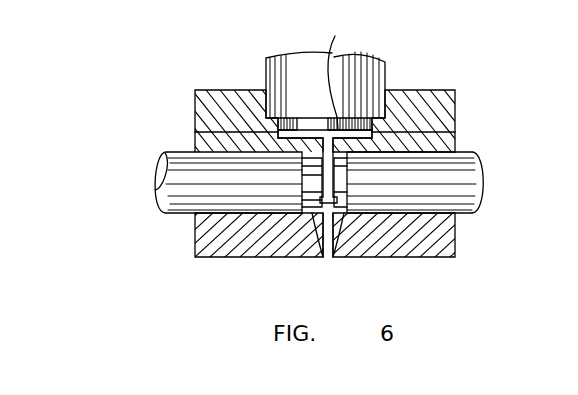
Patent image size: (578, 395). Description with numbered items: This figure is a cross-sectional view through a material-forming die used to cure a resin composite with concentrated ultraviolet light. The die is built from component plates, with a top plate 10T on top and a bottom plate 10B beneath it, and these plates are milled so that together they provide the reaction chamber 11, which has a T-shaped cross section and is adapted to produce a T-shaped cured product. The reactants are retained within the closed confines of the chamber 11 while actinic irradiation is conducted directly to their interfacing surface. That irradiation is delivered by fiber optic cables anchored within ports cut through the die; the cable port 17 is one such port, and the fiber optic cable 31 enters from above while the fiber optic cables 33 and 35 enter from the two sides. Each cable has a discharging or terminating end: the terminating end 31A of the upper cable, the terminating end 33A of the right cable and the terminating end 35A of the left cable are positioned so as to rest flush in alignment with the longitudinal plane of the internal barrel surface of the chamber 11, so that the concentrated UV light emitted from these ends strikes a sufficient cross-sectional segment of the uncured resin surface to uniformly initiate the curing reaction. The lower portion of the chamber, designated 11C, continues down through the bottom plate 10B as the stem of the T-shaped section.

The top plate 10T is at (433, 93).
The bottom block 10B is at (456, 240).
The reaction chamber 11 is at (336, 73).
The fiber channel in bottom block 11C is at (362, 257).
The fiber optic cable port 17 is at (198, 149).
The fiber optic cable 31 is at (292, 53).
The terminating end of fiber optic cable 31A is at (350, 127).
The fiber optic cable 33 is at (458, 158).
The terminating end of fiber optic cable 33A is at (477, 187).
The fiber optic cable 35 is at (180, 203).
The terminating end of fiber optic cable 35A is at (315, 210).